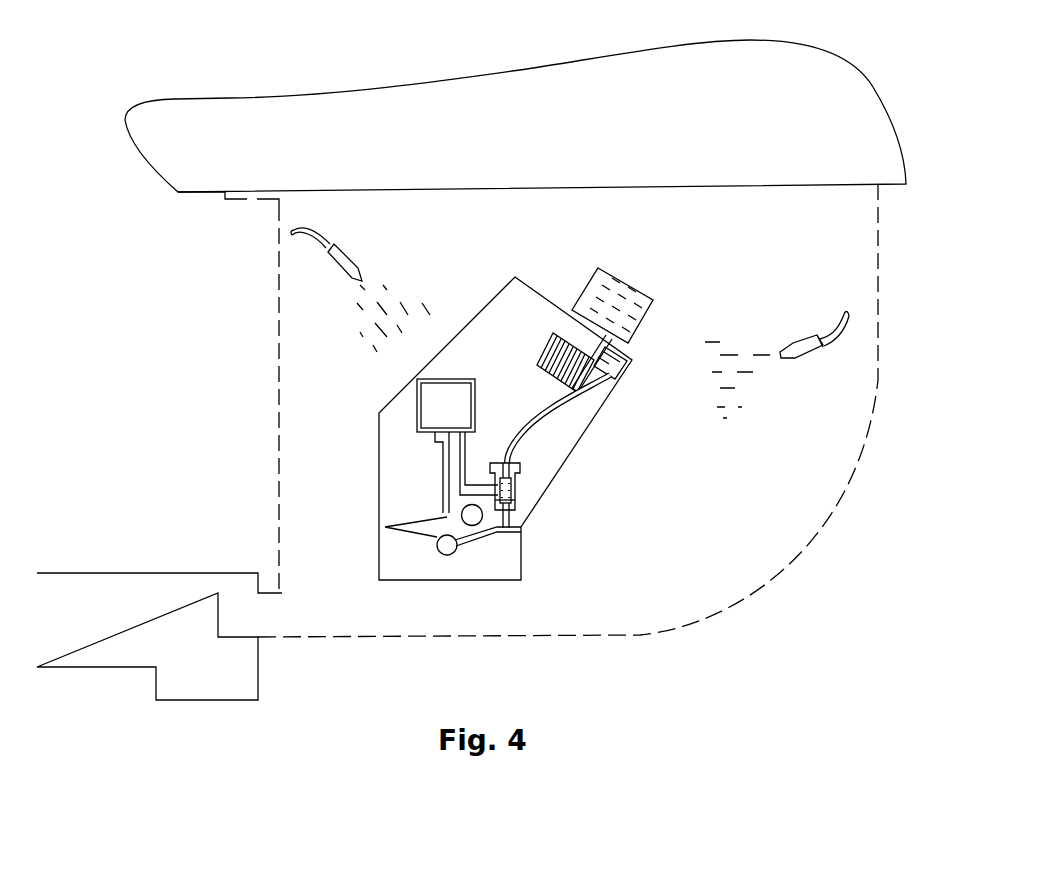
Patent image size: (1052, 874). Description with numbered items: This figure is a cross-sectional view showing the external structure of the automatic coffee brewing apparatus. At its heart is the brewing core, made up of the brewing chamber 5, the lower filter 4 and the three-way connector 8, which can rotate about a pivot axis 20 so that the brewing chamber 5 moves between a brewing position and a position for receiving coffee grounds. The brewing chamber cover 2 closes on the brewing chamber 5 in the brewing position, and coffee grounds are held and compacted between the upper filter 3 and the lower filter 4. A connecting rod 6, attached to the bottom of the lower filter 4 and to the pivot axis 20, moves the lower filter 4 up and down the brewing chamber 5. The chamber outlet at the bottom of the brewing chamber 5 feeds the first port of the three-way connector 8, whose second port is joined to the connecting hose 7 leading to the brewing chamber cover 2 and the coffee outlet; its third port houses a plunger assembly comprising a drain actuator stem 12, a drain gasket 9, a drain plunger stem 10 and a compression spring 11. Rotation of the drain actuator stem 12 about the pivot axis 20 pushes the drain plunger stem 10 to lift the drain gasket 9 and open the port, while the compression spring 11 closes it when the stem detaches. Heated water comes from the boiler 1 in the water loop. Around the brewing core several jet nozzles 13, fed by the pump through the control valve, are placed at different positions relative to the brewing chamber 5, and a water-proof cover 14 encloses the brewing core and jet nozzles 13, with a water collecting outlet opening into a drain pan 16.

The boiler 1 is at (647, 312).
The brewing chamber cover 2 is at (633, 361).
The upper filter 3 is at (585, 393).
The lower filter 4 is at (528, 425).
The brewing chamber 5 is at (475, 431).
The connecting rod 6 is at (466, 440).
The connecting hose 7 is at (513, 453).
The three-way connector 8 is at (518, 483).
The drain gasket 9 is at (519, 508).
The drain plunger stem 10 is at (516, 520).
The compression spring 11 is at (497, 497).
The drain actuator stem 12 is at (478, 537).
The jet nozzles 13 is at (345, 262).
The water-proof cover 14 is at (278, 303).
The drain pan 16 is at (120, 590).
The pivot axis 20 is at (449, 553).